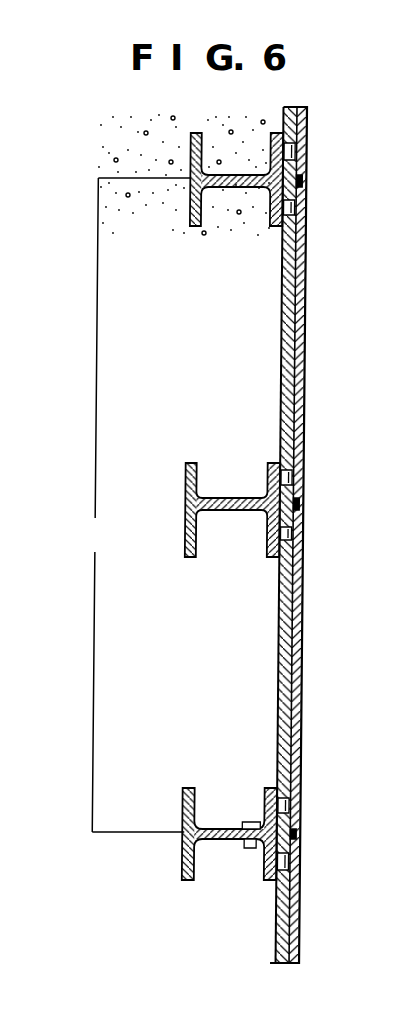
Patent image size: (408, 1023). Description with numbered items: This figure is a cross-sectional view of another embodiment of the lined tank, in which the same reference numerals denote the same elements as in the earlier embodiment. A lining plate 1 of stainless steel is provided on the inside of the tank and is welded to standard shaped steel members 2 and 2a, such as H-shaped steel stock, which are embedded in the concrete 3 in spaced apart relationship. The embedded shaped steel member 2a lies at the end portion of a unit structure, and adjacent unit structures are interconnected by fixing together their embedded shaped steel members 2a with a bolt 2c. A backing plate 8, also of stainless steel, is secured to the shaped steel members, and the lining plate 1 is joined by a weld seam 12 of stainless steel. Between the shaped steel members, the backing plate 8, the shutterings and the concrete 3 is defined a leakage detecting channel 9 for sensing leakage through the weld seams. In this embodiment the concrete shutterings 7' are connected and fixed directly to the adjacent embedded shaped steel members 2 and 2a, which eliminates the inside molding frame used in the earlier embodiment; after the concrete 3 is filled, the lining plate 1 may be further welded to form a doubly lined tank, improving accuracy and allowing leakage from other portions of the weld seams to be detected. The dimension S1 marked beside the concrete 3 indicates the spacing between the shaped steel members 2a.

The lining plate 1 is at (308, 239).
The shaped steel member 2 is at (195, 463).
The embedded shaped steel member 2a is at (196, 196).
The bolt 2c is at (256, 848).
The concrete 3 is at (117, 636).
The concrete shuttering 7' is at (252, 545).
The backing plate 8 is at (297, 498).
The leakage detecting channel 9 is at (291, 536).
The weld seam 12 is at (304, 505).
The span S1 is at (133, 505).